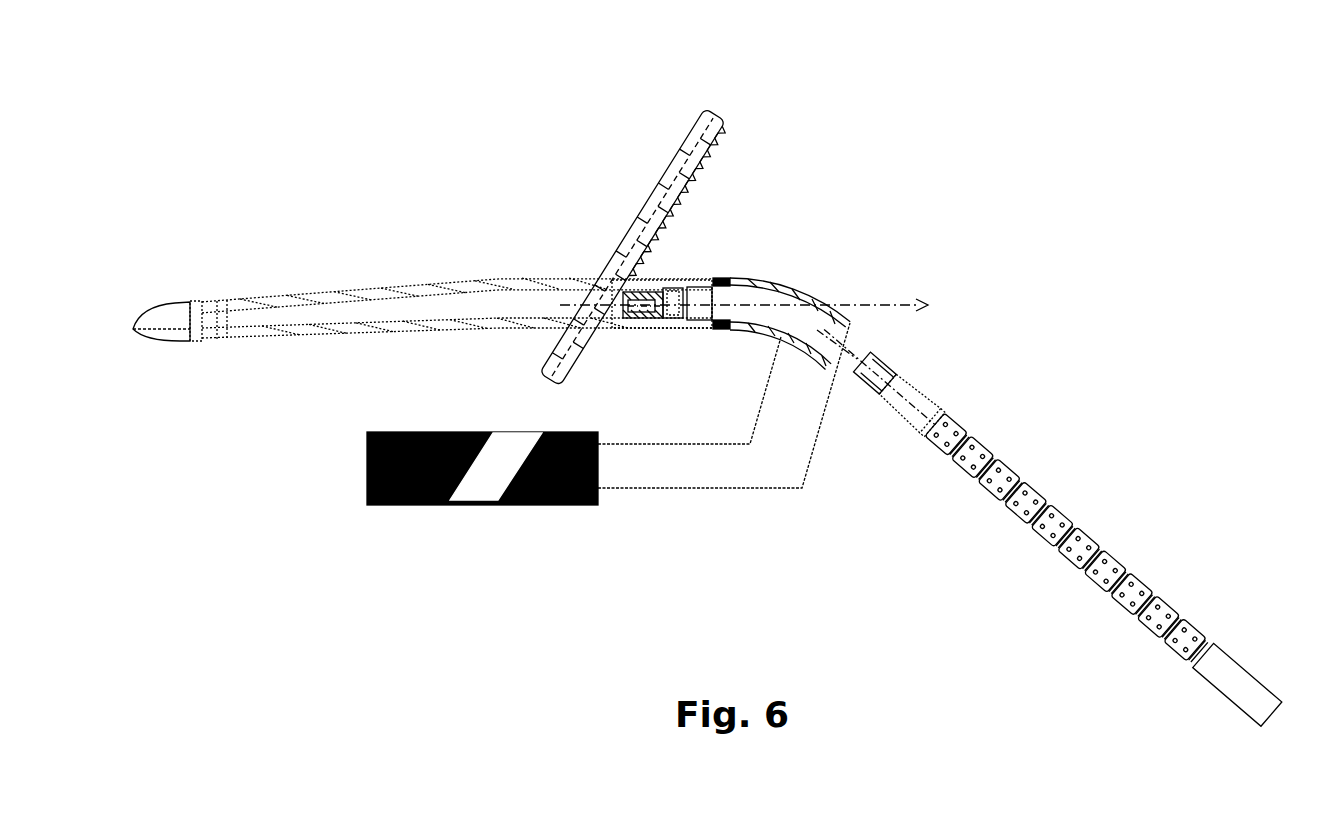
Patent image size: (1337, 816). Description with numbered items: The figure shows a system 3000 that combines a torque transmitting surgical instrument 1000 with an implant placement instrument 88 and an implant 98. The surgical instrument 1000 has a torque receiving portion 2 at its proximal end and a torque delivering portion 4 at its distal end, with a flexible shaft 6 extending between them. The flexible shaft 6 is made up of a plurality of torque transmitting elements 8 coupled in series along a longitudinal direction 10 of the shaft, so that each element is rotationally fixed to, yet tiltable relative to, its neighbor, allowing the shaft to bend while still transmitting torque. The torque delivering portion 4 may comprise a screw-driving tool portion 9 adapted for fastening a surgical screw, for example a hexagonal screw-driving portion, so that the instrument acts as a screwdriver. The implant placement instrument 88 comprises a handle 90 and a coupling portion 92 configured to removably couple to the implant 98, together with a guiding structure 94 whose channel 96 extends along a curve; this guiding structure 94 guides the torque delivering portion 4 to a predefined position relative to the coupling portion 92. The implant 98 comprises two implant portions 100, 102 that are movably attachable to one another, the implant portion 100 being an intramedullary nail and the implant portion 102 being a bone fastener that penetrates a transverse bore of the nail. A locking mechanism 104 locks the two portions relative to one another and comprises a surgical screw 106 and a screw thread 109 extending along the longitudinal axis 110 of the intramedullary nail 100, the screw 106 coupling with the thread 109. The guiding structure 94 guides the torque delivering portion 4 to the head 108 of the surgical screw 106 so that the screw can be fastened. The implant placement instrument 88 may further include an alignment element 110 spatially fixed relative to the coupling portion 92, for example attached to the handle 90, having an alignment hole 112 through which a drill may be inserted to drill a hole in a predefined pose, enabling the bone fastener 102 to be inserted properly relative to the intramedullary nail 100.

The system 3000 is at (200, 128).
The implant 98 is at (494, 189).
The implant portion 100 is at (308, 299).
The implant portion 102 is at (672, 150).
The locking mechanism 104 is at (642, 350).
The surgical screw 106 is at (637, 298).
The head 108 is at (658, 287).
The screw thread 109 is at (637, 300).
The coupling portion 92 is at (722, 276).
The guiding structure 94 is at (809, 241).
The channel 96 is at (762, 313).
The alignment element 110 is at (858, 305).
The longitudinal direction 10 is at (852, 352).
The implant placement instrument 88 is at (562, 566).
The alignment hole 112 is at (475, 480).
The handle 90 is at (738, 470).
The surgical instrument 1000 is at (1171, 401).
The torque delivering portion 4 is at (921, 385).
The screw-driving tool portion 9 is at (861, 390).
The flexible shaft 6 is at (1078, 494).
The torque transmitting elements 8 is at (1003, 502).
The torque receiving portion 2 is at (1251, 649).